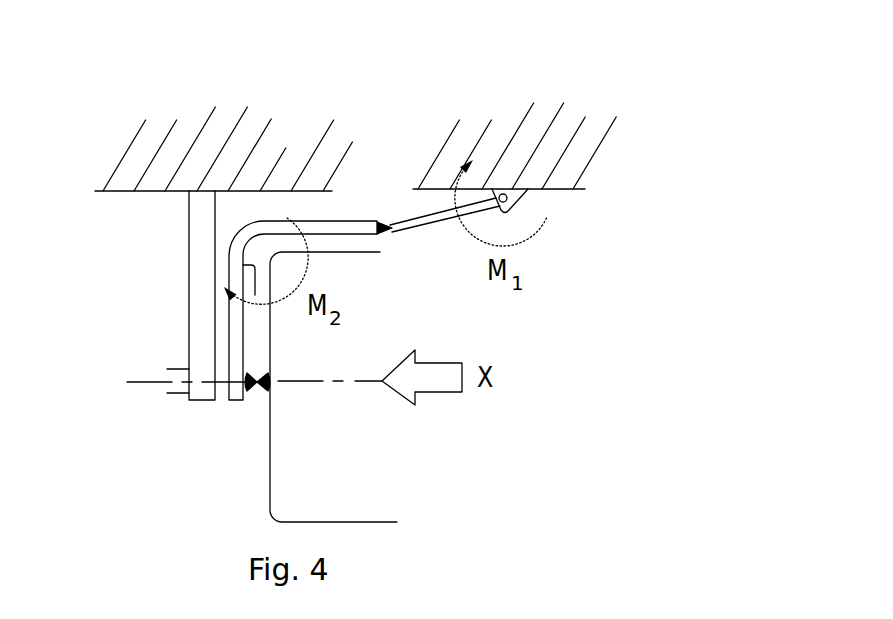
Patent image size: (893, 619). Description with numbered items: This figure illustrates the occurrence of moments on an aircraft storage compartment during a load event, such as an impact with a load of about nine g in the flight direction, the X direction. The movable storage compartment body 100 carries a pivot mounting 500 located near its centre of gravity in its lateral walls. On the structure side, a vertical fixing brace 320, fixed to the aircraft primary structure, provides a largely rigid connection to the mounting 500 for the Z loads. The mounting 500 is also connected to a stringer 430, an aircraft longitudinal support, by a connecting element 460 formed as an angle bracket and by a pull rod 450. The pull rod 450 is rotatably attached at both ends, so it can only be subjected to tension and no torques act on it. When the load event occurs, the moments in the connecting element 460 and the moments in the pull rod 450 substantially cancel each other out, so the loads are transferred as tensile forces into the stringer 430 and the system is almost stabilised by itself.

The movable storage compartment body 100 is at (297, 475).
The fixing brace 320 is at (203, 247).
The stringer 430 is at (505, 132).
The pull rod 450 is at (410, 217).
The connecting element 460 is at (357, 222).
The pivot mounting 500 is at (170, 407).